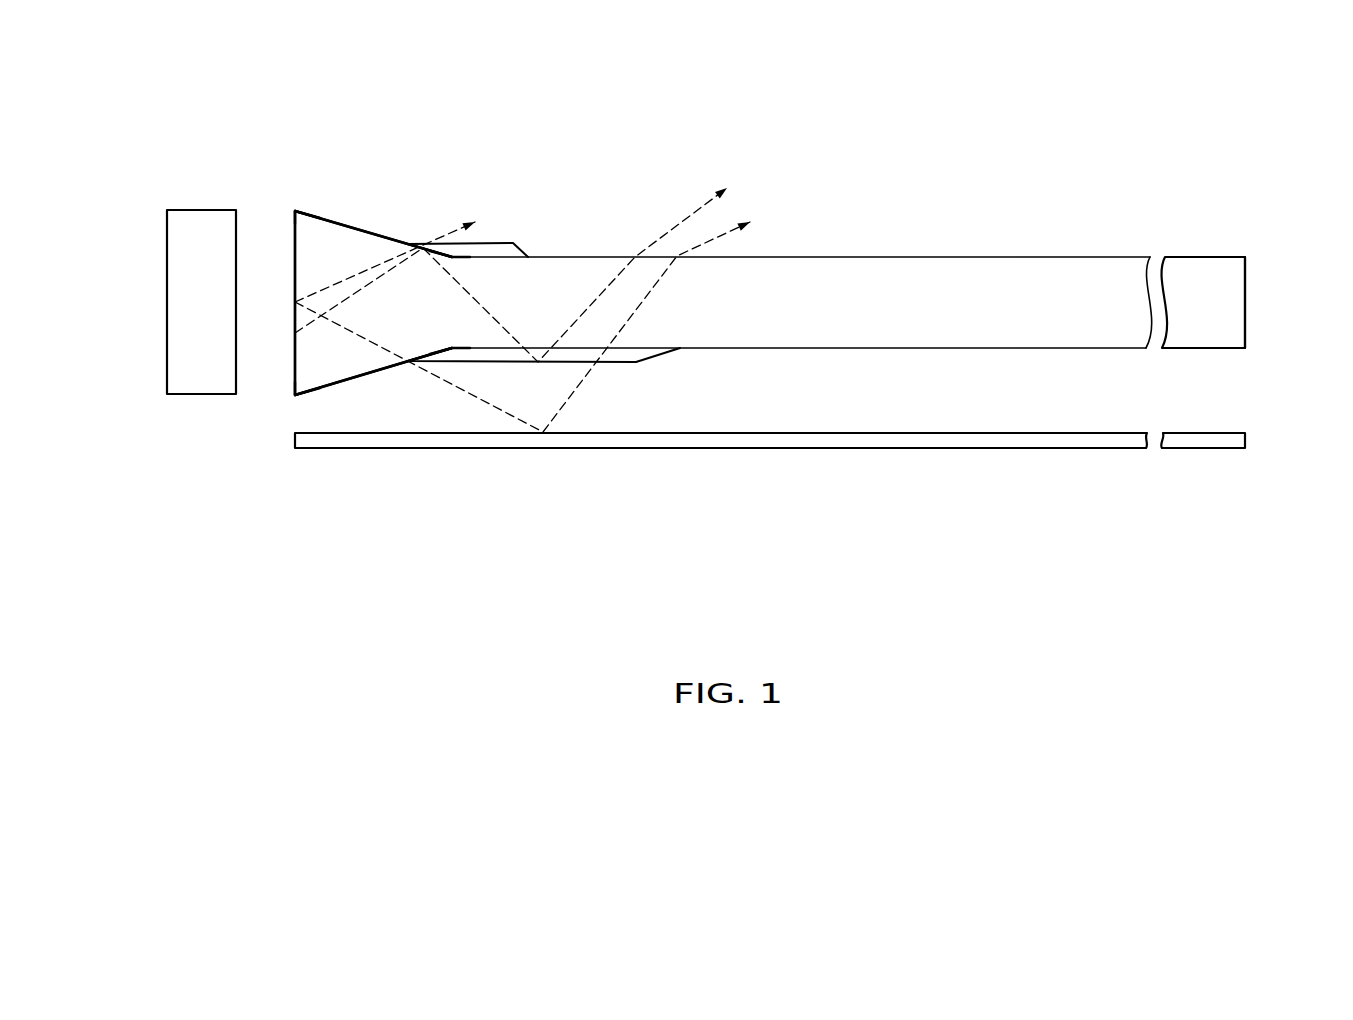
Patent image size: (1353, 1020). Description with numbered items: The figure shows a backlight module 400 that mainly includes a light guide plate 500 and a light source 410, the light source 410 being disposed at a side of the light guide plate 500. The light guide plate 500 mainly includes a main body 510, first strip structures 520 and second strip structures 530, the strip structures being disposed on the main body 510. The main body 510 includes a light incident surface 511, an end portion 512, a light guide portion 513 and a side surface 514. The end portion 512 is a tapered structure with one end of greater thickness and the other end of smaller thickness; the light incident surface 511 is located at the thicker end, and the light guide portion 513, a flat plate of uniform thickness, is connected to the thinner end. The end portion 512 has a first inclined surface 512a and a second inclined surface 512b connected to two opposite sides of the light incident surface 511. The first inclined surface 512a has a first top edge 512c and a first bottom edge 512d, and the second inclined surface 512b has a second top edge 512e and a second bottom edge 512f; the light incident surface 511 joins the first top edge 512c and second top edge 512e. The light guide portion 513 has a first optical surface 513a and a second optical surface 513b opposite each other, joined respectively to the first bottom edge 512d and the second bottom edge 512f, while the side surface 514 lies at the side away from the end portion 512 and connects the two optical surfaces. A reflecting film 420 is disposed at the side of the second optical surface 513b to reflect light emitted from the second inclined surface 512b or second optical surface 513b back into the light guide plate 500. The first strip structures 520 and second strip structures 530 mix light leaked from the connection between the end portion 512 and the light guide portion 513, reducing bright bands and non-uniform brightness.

The backlight module 400 is at (132, 95).
The light source 410 is at (180, 297).
The reflecting film 420 is at (965, 442).
The light guide plate 500 is at (1184, 222).
The main body 510 is at (1235, 305).
The light incident surface 511 is at (293, 232).
The end portion 512 is at (357, 240).
The first inclined surface 512a is at (323, 215).
The second inclined surface 512b is at (320, 390).
The first top edge 512c is at (298, 210).
The first bottom edge 512d is at (453, 255).
The second top edge 512e is at (295, 395).
The second bottom edge 512f is at (453, 348).
The light guide portion 513 is at (802, 280).
The first optical surface 513a is at (1107, 256).
The second optical surface 513b is at (872, 350).
The side surface 514 is at (1247, 275).
The first strip structures 520 is at (513, 250).
The second strip structures 530 is at (648, 352).